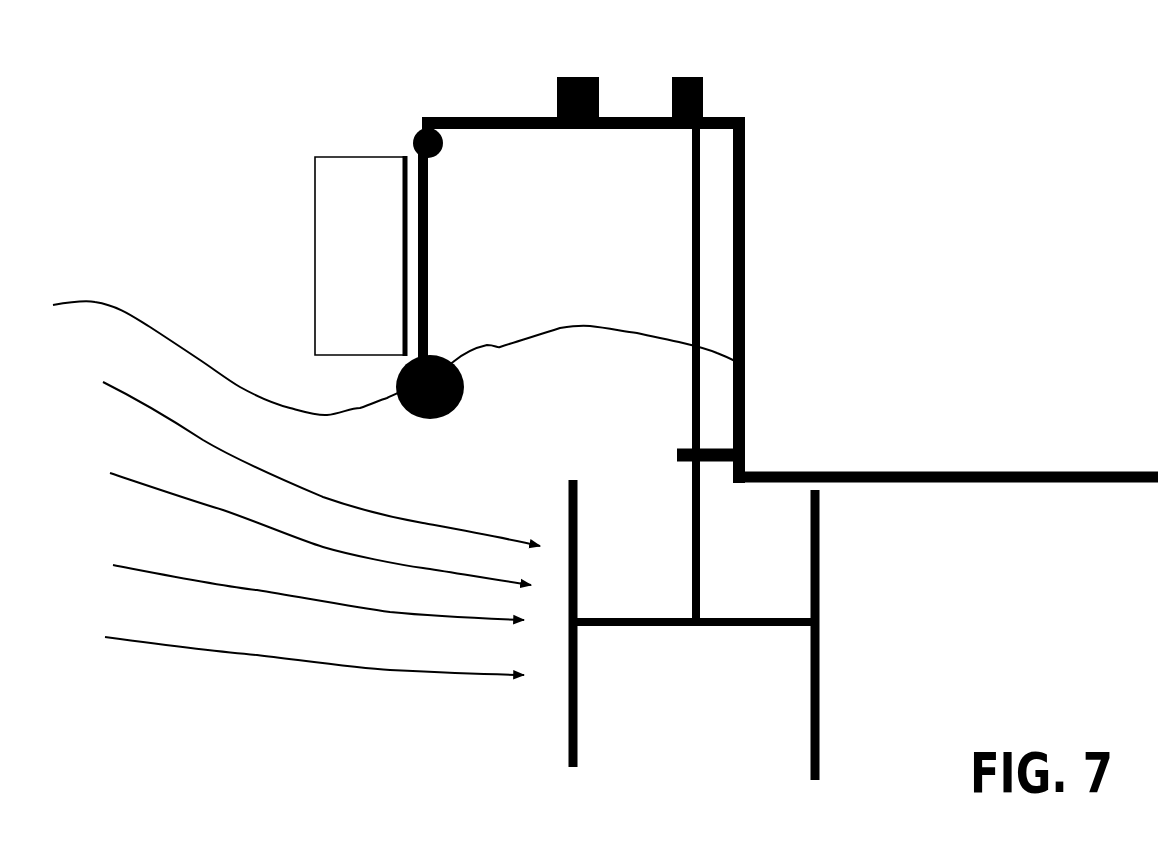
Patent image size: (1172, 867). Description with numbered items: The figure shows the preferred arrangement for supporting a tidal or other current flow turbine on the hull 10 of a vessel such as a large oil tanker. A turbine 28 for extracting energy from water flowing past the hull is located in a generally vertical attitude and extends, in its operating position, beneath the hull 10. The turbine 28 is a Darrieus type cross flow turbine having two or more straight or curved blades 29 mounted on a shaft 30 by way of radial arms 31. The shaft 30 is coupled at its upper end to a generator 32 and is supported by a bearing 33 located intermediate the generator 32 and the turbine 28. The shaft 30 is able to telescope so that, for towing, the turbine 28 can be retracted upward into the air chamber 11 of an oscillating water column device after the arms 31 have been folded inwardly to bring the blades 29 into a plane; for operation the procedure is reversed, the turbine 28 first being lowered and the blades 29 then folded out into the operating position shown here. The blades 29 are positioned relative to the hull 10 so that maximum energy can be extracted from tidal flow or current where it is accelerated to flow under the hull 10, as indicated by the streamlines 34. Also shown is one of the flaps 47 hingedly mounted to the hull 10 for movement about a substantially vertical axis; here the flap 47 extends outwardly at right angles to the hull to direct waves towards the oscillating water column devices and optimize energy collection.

The hull 10 is at (902, 462).
The air chamber 11 is at (582, 192).
The turbine 28 is at (553, 707).
The blades 29 is at (583, 520).
The shaft 30 is at (705, 278).
The radial arms 31 is at (773, 628).
The generator 32 is at (713, 98).
The bearing 33 is at (705, 442).
The streamlines 34 is at (321, 528).
The flaps 47 is at (335, 217).